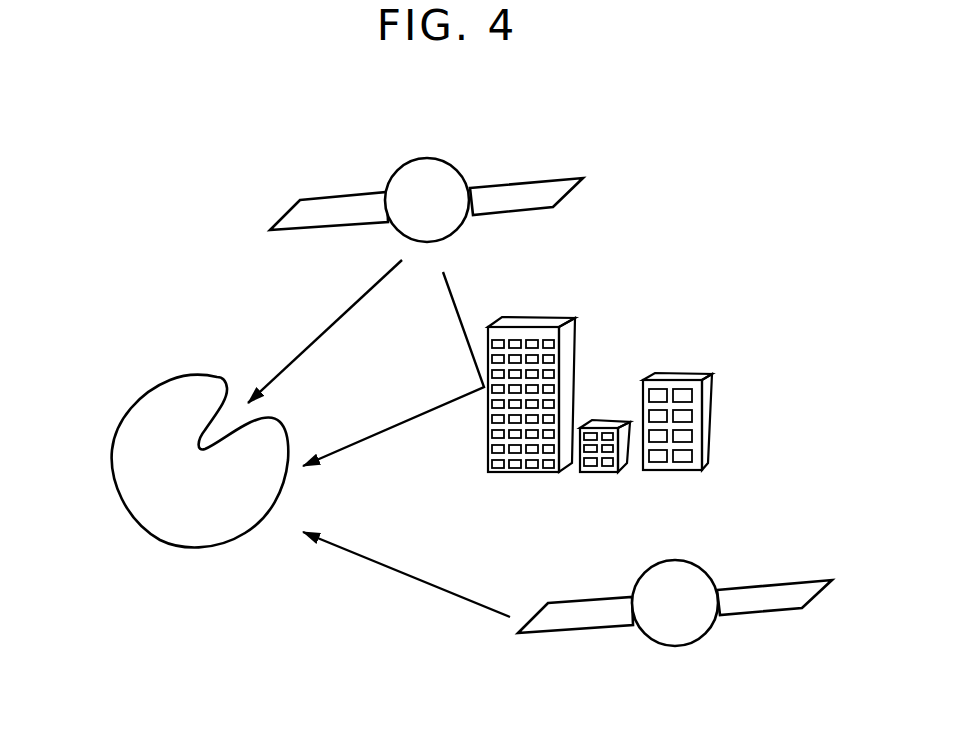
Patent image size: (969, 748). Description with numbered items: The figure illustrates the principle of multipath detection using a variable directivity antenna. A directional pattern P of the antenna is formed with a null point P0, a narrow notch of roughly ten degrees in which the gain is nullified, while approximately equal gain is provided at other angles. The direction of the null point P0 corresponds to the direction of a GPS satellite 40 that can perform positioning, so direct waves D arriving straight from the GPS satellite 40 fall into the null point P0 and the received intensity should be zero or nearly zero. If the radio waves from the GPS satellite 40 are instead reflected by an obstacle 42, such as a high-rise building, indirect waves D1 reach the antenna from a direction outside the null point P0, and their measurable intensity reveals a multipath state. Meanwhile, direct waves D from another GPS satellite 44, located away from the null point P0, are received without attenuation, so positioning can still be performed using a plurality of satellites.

The GPS satellite 40 is at (508, 183).
The obstacle 42 is at (542, 315).
The GPS satellite 44 is at (768, 581).
The directional pattern P is at (124, 410).
The null point P0 is at (238, 400).
The direct waves D is at (320, 333).
The indirect waves D1 is at (395, 430).